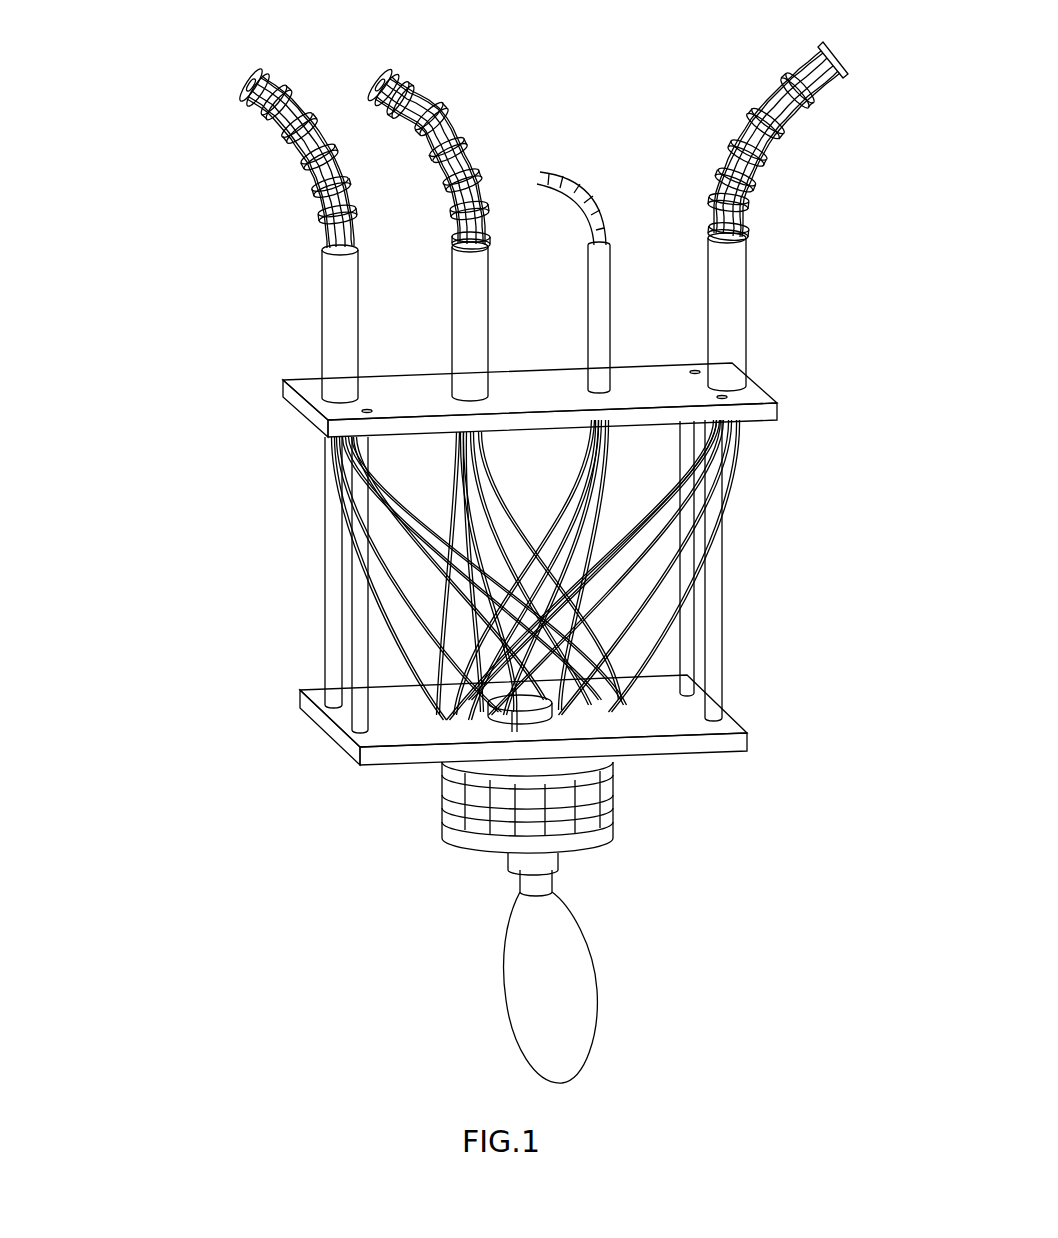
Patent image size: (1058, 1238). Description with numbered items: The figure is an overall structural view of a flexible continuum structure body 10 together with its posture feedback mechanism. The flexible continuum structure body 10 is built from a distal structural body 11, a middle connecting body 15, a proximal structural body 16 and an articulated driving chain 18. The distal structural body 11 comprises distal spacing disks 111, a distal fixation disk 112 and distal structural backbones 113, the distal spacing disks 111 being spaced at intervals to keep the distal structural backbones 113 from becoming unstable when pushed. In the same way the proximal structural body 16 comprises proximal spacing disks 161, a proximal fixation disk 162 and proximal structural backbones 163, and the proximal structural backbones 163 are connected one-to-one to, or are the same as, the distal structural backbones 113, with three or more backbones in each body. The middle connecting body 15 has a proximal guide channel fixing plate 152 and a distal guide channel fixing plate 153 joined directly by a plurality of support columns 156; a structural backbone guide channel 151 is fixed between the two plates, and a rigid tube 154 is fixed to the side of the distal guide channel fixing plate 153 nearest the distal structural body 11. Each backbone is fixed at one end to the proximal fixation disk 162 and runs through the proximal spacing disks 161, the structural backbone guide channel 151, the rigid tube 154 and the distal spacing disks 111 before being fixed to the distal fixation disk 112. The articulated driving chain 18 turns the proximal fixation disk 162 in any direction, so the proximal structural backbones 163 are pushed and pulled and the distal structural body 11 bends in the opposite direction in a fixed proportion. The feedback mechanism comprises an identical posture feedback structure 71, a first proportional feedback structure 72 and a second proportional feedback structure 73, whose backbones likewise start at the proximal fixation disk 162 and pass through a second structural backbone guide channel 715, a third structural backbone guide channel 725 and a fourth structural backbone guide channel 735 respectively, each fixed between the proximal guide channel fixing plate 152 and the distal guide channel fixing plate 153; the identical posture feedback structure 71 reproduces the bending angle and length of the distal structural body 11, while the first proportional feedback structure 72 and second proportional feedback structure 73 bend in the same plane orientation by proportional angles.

The flexible continuum structure body 10 is at (328, 313).
The distal structural body 11 is at (206, 157).
The distal spacing disks 111 is at (240, 140).
The distal fixation disk 112 is at (210, 92).
The distal structural backbones 113 is at (264, 181).
The middle connecting body 15 is at (470, 553).
The structural backbone guide channel 151 is at (275, 585).
The proximal guide channel fixing plate 152 is at (453, 720).
The distal guide channel fixing plate 153 is at (253, 564).
The rigid tube 154 is at (472, 389).
The support columns 156 is at (794, 570).
The proximal structural body 16 is at (425, 850).
The proximal spacing disks 161 is at (454, 801).
The proximal fixation disk 162 is at (507, 847).
The proximal structural backbones 163 is at (472, 846).
The articulated driving chain 18 is at (566, 981).
The identical posture feedback structure 71 is at (481, 178).
The first proportional feedback structure 72 is at (593, 206).
The second proportional feedback structure 73 is at (760, 98).
The second structural backbone guide channel 715 is at (622, 559).
The third structural backbone guide channel 725 is at (674, 570).
The fourth structural backbone guide channel 735 is at (681, 570).